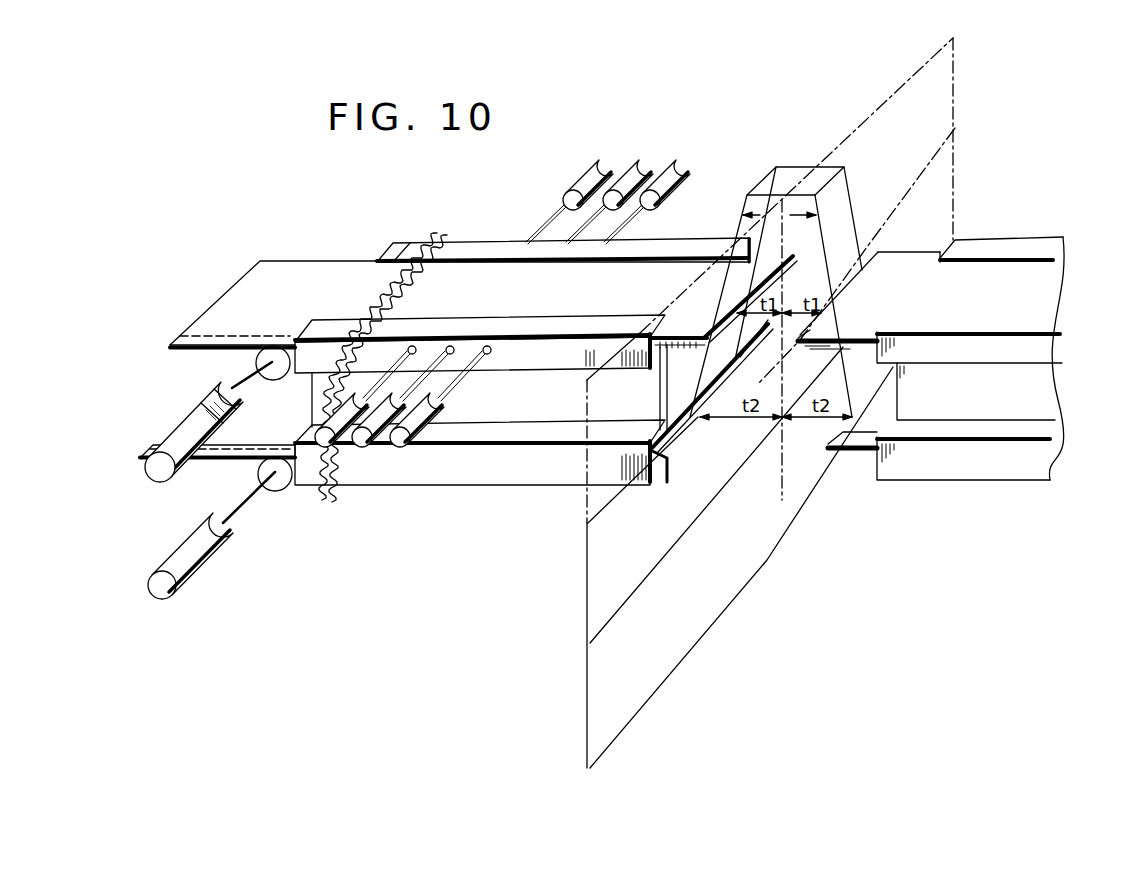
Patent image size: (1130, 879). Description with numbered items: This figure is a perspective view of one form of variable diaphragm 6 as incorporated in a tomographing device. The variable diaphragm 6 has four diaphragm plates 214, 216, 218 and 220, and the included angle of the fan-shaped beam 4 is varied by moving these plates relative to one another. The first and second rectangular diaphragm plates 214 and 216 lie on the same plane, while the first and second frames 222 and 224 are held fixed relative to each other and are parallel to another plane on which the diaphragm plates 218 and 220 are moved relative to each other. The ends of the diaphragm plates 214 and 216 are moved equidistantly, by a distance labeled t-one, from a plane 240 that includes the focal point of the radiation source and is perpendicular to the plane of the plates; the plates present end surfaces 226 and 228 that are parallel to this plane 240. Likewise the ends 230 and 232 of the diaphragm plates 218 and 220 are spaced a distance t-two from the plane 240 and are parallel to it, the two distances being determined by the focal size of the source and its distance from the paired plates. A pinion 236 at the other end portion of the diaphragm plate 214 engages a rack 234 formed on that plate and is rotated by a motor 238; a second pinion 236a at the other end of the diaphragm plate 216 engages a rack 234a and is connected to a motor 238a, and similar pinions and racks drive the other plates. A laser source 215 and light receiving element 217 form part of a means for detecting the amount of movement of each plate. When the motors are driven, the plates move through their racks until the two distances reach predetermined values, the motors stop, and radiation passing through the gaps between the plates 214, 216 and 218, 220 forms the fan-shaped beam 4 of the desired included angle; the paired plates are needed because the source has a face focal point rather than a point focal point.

The fan-shaped beam 4 is at (835, 192).
The variable diaphragm 6 is at (745, 160).
The first rectangular diaphragm plate 214 is at (312, 263).
The laser source 215 is at (405, 473).
The second rectangular diaphragm plate 216 is at (1038, 297).
The light receiving element 217 is at (672, 165).
The diaphragm plate 218 is at (220, 387).
The diaphragm plate 220 is at (868, 440).
The first frame 222 is at (648, 247).
The second frame 224 is at (1037, 247).
The end surface 226 is at (733, 315).
The end surface 228 is at (835, 293).
The end surface 230 is at (682, 430).
The end surface 232 is at (842, 437).
The rack 234 is at (200, 335).
The rack 234a is at (237, 443).
The pinion 236 is at (283, 370).
The second pinion 236a is at (287, 490).
The motor 238 is at (155, 477).
The motor 238a is at (165, 592).
The plane including focal point 240 is at (668, 668).